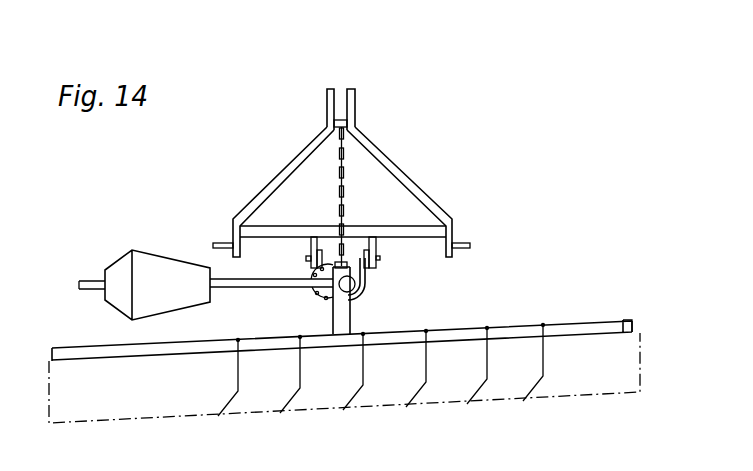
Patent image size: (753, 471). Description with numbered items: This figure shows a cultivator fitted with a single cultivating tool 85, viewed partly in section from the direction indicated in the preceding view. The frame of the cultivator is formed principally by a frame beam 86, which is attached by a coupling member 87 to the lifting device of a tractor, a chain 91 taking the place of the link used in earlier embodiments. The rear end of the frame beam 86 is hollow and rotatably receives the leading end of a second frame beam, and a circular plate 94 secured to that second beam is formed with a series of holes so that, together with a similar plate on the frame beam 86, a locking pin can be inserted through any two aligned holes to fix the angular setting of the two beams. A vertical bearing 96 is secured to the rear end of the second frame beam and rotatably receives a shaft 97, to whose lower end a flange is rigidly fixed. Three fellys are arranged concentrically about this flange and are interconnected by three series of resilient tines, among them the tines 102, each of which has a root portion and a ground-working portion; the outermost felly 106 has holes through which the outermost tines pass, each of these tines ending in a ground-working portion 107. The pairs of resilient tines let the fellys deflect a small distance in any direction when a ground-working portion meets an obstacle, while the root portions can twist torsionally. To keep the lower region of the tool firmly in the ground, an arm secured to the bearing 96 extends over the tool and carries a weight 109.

The cultivating tool 85 is at (71, 336).
The frame beam 86 is at (366, 286).
The coupling member 87 is at (277, 180).
The chain 91 is at (347, 208).
The circular plate 94 is at (323, 301).
The vertical bearing 96 is at (351, 318).
The shaft 97 is at (337, 263).
The tine 102 is at (268, 287).
The felly 106 is at (625, 321).
The ground-working portion 107 is at (537, 385).
The weight 109 is at (150, 256).